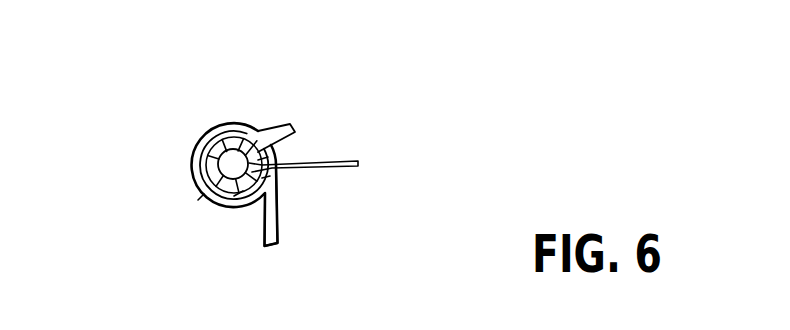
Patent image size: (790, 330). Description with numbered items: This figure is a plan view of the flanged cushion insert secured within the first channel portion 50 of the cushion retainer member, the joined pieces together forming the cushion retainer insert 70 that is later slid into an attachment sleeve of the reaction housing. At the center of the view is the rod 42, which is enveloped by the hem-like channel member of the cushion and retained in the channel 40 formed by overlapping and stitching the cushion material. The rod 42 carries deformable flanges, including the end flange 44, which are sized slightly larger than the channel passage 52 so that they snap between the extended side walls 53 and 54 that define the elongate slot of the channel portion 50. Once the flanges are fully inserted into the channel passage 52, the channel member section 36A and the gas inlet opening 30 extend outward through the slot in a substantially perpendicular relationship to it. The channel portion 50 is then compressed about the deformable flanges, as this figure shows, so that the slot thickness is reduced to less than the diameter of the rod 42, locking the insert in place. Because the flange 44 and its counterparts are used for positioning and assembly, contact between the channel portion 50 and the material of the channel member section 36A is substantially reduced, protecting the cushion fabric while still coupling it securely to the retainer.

The cushion retainer insert 70 is at (193, 118).
The extended side wall 53 is at (272, 124).
The extended side wall 54 is at (280, 228).
The channel member section 36A is at (268, 157).
The gas inlet opening 30 is at (334, 160).
The channel 40 is at (270, 176).
The rod 42 is at (212, 161).
The end flange 44 is at (236, 163).
The first channel portion 50 is at (199, 200).
The channel passage 52 is at (240, 186).